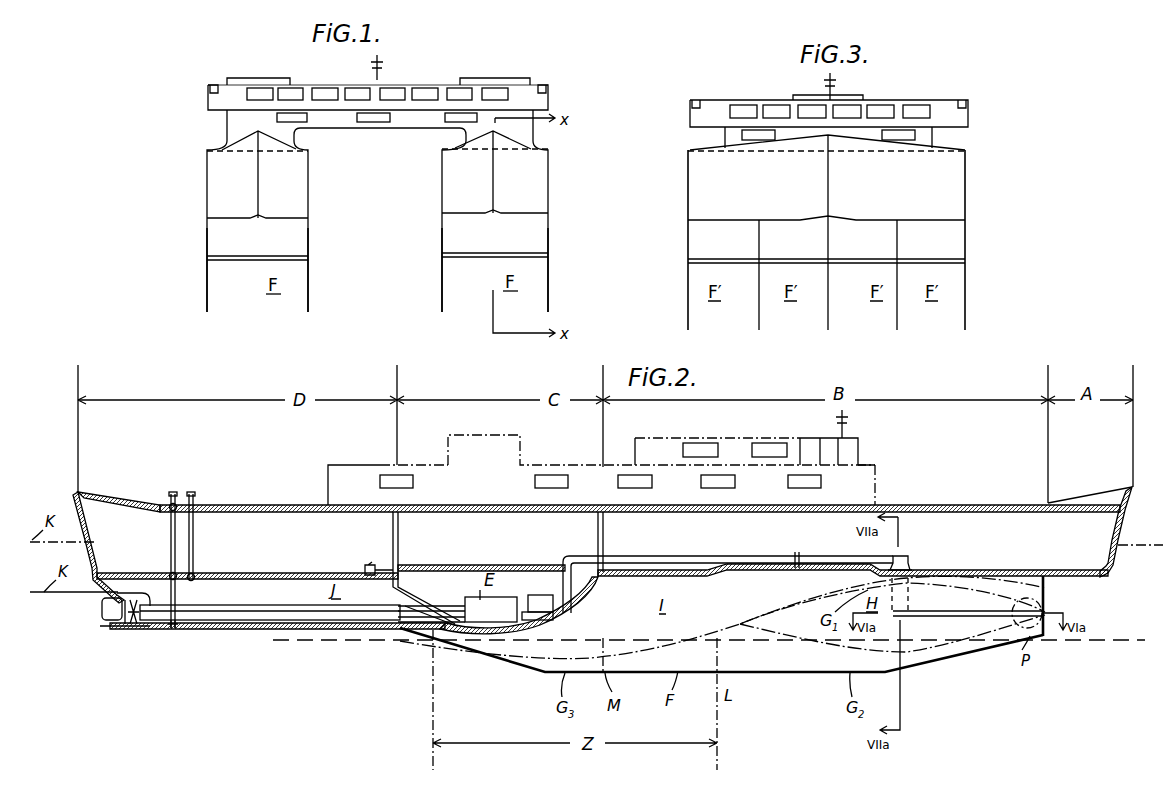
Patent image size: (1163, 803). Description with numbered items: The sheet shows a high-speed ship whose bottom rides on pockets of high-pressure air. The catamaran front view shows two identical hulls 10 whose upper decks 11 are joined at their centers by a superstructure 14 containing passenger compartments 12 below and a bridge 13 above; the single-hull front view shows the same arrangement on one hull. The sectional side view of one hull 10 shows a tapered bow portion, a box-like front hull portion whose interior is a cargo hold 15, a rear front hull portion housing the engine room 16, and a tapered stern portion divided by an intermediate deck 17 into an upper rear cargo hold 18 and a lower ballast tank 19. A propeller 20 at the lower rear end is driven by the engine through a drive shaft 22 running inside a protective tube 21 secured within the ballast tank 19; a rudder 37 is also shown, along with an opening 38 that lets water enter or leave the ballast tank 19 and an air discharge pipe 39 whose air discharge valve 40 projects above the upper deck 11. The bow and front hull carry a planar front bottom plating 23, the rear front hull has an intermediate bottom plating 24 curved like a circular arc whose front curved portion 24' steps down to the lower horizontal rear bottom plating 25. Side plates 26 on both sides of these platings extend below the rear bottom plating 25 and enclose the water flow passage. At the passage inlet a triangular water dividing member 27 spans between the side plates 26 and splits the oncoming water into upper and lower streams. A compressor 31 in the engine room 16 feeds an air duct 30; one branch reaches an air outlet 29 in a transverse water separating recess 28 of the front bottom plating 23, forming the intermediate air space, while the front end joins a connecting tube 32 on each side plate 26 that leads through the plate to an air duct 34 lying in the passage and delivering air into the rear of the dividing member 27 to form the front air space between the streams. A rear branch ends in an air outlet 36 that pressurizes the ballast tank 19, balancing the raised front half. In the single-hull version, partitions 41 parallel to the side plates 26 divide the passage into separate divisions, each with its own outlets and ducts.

In FIG. 1, the hull 10 is at (310, 168).
In FIG. 2, the hull 10 is at (968, 505).
In FIG. 1, the upper deck 11 is at (240, 153).
In FIG. 3, the upper deck 11 is at (806, 153).
In FIG. 2, the upper deck 11 is at (262, 505).
In FIG. 1, the passenger compartments 12 is at (400, 122).
In FIG. 3, the passenger compartments 12 is at (933, 137).
In FIG. 2, the passenger compartments 12 is at (872, 478).
In FIG. 1, the bridge 13 is at (525, 85).
In FIG. 3, the bridge 13 is at (969, 118).
In FIG. 2, the bridge 13 is at (855, 445).
In FIG. 1, the superstructure 14 is at (410, 80).
In FIG. 2, the cargo hold 15 is at (852, 542).
In FIG. 2, the engine room 16 is at (445, 536).
In FIG. 2, the intermediate deck 17 is at (263, 572).
In FIG. 2, the rear cargo hold 18 is at (240, 534).
In FIG. 2, the ballast tank 19 is at (275, 599).
In FIG. 2, the propeller 20 is at (130, 628).
In FIG. 2, the protective tube 21 is at (255, 625).
In FIG. 2, the drive shaft 22 is at (400, 622).
In FIG. 1, the front bottom plating 23 is at (292, 216).
In FIG. 3, the front bottom plating 23 is at (952, 220).
In FIG. 2, the front bottom plating 23 is at (952, 570).
In FIG. 2, the intermediate bottom plating 24 is at (721, 636).
In FIG. 2, the front curved portion 24' is at (600, 567).
In FIG. 2, the rear bottom plating 25 is at (312, 630).
In FIG. 1, the side plates 26 is at (207, 285).
In FIG. 3, the side plates 26 is at (966, 240).
In FIG. 2, the side plates 26 is at (913, 660).
In FIG. 1, the water dividing member 27 is at (241, 260).
In FIG. 3, the water dividing member 27 is at (860, 264).
In FIG. 2, the water dividing member 27 is at (1044, 613).
In FIG. 2, the water separating recess 28 is at (725, 573).
In FIG. 2, the air outlet 29 is at (790, 578).
In FIG. 2, the air duct 30 is at (478, 565).
In FIG. 2, the compressor 31 is at (540, 596).
In FIG. 2, the connecting tube 32 is at (900, 565).
In FIG. 2, the air duct 34 is at (910, 620).
In FIG. 2, the air outlet 36 is at (366, 565).
In FIG. 2, the rudder 37 is at (105, 622).
In FIG. 2, the opening 38 is at (175, 629).
In FIG. 2, the air discharge pipe 39 is at (194, 553).
In FIG. 2, the air discharge valve 40 is at (195, 495).
In FIG. 3, the partitions 41 is at (760, 312).